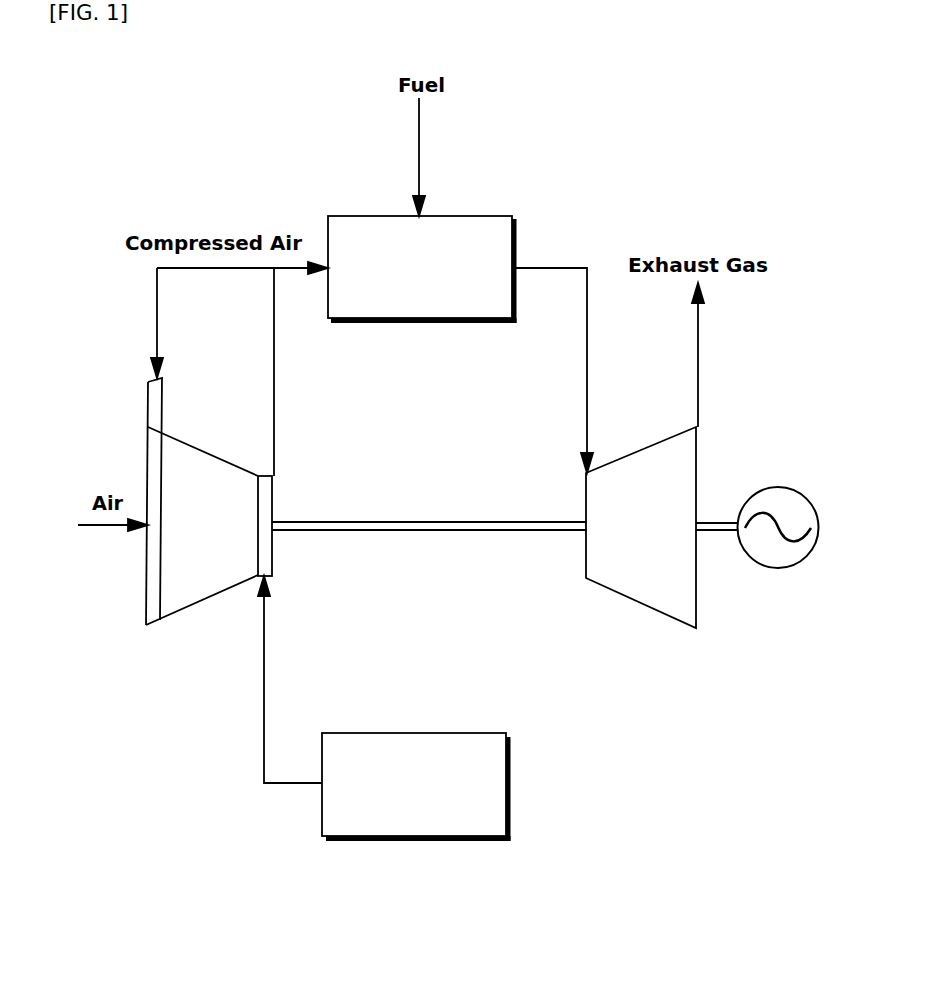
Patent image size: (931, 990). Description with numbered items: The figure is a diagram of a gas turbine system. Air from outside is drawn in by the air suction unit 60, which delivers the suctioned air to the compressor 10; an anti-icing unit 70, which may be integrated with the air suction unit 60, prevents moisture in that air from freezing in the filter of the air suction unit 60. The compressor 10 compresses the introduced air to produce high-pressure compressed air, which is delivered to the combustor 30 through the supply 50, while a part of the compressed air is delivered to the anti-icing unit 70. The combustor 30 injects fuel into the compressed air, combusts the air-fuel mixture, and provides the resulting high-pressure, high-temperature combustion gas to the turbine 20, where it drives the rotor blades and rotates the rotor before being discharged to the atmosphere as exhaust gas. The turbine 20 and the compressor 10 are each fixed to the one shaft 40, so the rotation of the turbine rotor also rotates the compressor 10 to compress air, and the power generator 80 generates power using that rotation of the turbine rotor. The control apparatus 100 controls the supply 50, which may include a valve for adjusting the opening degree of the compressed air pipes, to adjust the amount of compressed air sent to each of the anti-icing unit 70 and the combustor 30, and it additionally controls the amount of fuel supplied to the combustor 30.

The compressor 10 is at (203, 602).
The turbine 20 is at (638, 604).
The combustor 30 is at (340, 216).
The shaft 40 is at (352, 532).
The supply 50 is at (262, 476).
The air suction unit 60 is at (152, 626).
The anti-icing unit 70 is at (147, 401).
The power generator 80 is at (775, 569).
The control apparatus 100 is at (510, 781).